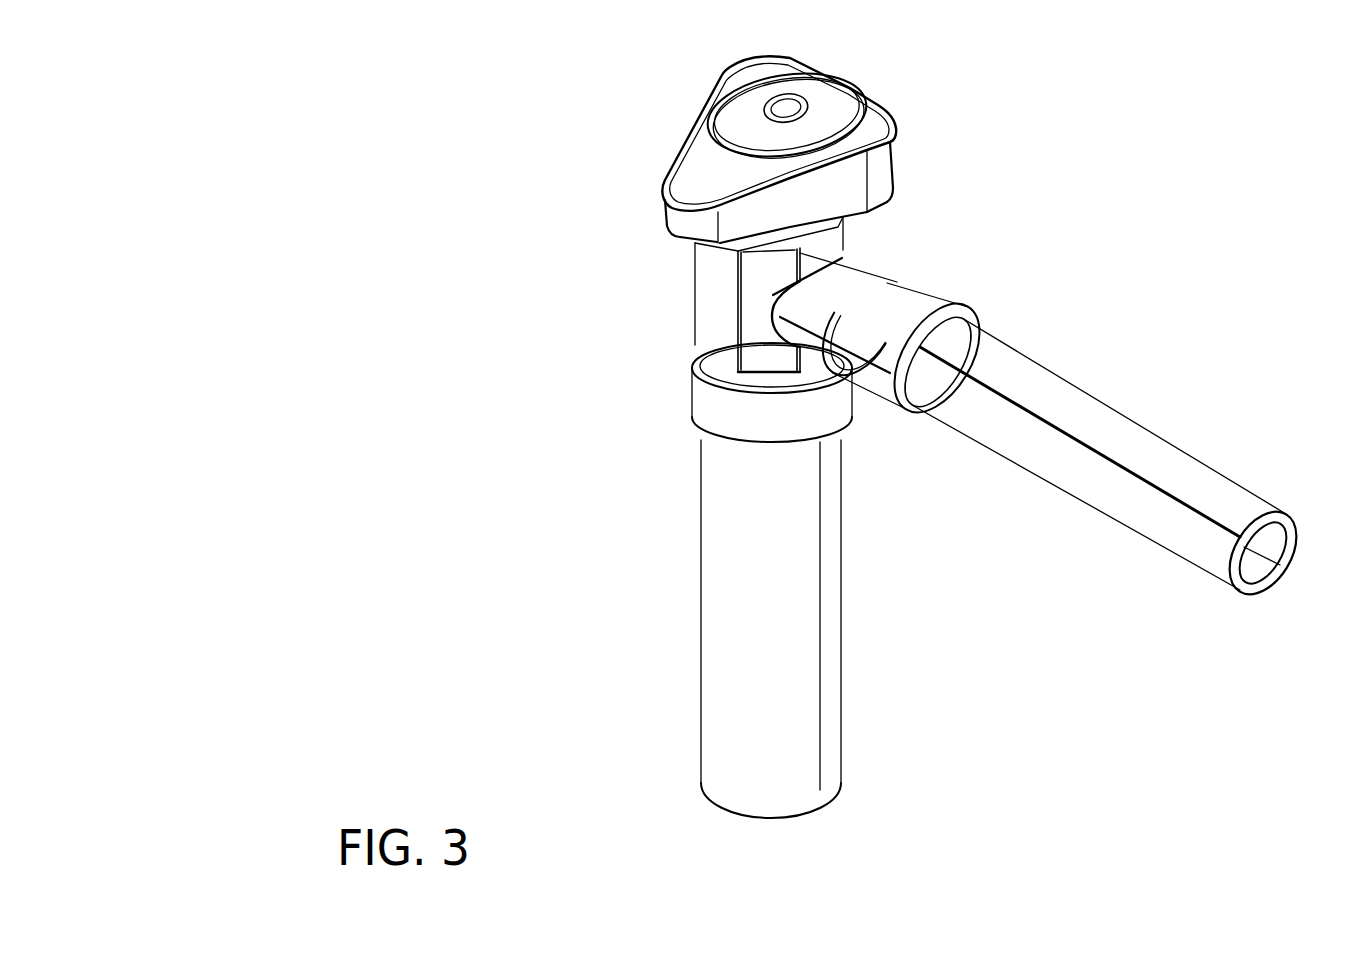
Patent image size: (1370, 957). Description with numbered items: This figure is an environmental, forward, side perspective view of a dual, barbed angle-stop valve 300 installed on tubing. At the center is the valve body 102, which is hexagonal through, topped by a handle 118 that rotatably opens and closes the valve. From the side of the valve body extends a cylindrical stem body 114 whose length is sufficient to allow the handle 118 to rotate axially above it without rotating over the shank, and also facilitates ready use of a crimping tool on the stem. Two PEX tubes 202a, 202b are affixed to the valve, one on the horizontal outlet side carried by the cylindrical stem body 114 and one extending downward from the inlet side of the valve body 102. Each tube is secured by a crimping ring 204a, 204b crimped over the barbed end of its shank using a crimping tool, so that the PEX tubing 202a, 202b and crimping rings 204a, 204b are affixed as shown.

The dual, barbed angle-stop valve 300 is at (280, 134).
The handle 118 is at (705, 183).
The valve body 102 is at (715, 307).
The cylindrical stem body 114 is at (838, 267).
The crimping ring 204a is at (905, 305).
The crimping ring 204b is at (710, 395).
The PEX tubing 202a is at (1225, 628).
The PEX tubing 202b is at (680, 427).